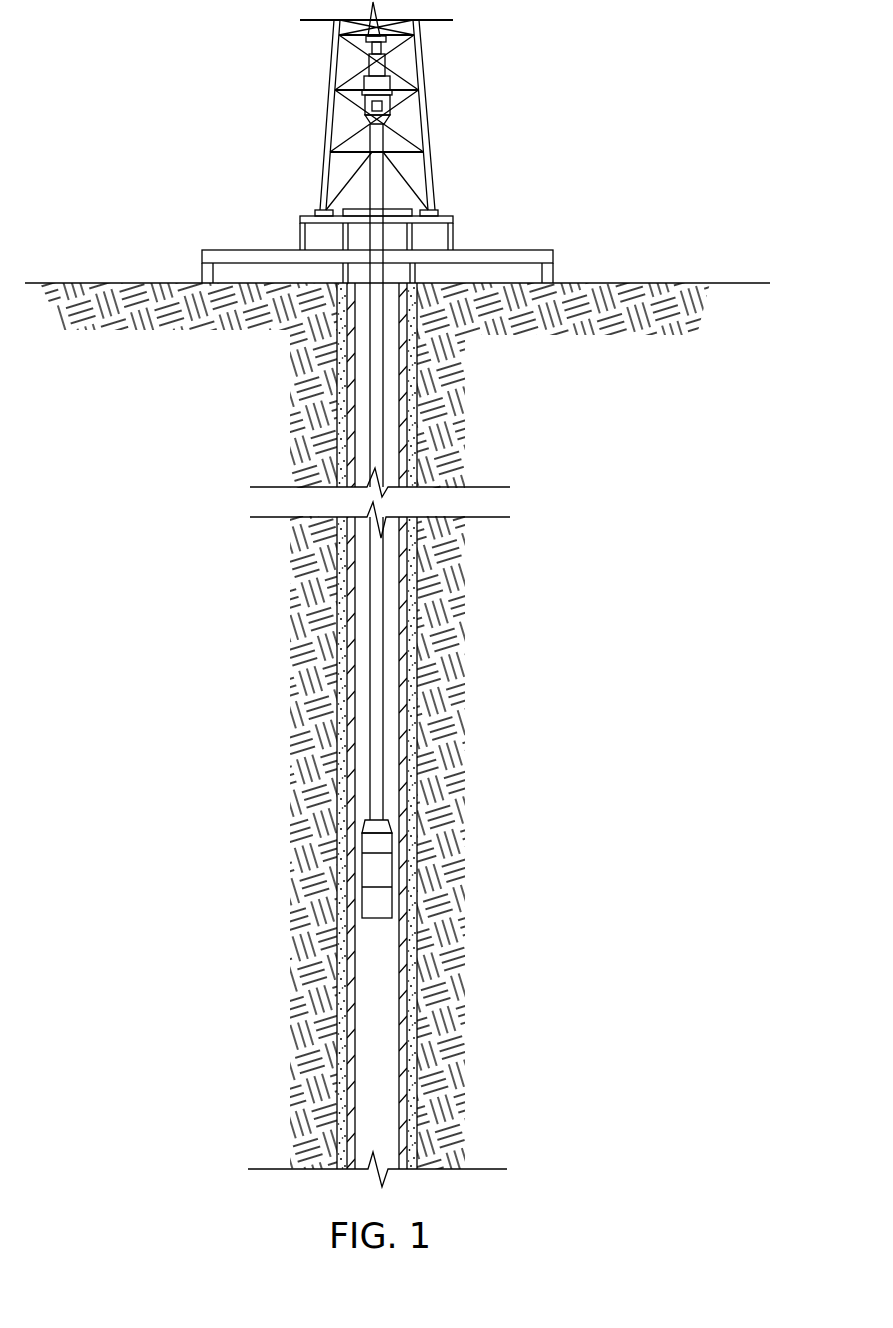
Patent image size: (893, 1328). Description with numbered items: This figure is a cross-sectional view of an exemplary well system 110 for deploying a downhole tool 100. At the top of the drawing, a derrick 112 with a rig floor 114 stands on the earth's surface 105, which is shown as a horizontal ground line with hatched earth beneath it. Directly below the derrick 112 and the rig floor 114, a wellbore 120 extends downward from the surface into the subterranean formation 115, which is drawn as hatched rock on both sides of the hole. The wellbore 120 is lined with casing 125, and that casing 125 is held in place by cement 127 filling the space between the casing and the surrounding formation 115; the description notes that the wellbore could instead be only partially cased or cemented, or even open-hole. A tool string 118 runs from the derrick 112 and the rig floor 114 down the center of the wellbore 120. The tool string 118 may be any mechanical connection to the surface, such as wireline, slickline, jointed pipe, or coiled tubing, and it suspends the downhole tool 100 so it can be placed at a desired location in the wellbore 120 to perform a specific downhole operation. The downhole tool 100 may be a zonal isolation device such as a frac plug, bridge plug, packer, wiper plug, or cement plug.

The downhole tool 100 is at (396, 867).
The earth's surface 105 is at (85, 283).
The well system 110 is at (587, 103).
The derrick 112 is at (327, 111).
The rig floor 114 is at (227, 250).
The subterranean formation 115 is at (453, 1102).
The tool string 118 is at (383, 777).
The wellbore 120 is at (392, 672).
The casing 125 is at (397, 1028).
The cement 127 is at (415, 725).